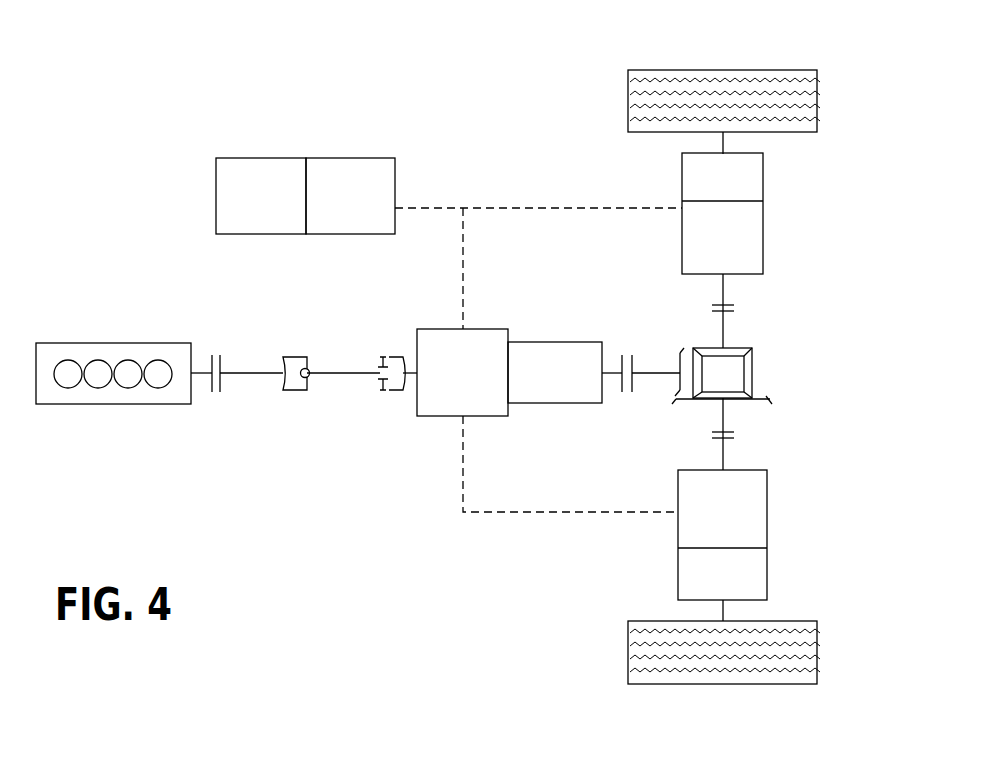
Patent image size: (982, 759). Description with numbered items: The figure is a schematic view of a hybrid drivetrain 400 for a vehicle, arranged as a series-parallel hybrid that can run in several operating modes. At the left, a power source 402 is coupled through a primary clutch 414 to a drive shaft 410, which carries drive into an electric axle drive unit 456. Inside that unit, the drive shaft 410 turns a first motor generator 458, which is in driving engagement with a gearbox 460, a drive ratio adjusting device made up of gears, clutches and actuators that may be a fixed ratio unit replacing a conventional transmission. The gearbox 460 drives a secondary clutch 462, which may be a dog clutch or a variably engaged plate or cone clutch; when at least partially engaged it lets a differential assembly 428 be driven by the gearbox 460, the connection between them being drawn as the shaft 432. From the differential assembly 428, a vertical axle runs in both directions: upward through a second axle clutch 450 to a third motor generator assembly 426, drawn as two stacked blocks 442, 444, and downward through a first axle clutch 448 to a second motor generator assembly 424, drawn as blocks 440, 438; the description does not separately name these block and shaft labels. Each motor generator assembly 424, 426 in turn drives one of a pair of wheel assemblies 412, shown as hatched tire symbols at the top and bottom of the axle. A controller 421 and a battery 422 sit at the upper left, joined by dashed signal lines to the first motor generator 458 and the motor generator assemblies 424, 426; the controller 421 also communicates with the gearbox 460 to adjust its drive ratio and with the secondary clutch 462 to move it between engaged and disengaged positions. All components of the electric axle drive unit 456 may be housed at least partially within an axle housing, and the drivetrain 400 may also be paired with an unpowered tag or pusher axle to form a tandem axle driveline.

The hybrid drivetrain 400 is at (723, 52).
The power source 402 is at (112, 343).
The drive shaft 410 is at (347, 371).
The wheel assemblies 412 is at (817, 99).
The primary clutch 414 is at (225, 386).
The controller 421 is at (346, 158).
The battery 422 is at (260, 158).
The second motor generator assembly 424 is at (780, 483).
The third motor generator assembly 426 is at (775, 154).
The differential assembly 428 is at (767, 371).
The shaft 432 is at (655, 371).
The electric machine 438 is at (741, 586).
The gear reduction 440 is at (741, 521).
The electric machine 442 is at (741, 191).
The gear reduction 444 is at (741, 253).
The first axle clutch 448 is at (734, 430).
The second axle clutch 450 is at (734, 306).
The electric axle drive unit 456 is at (590, 134).
The first motor generator 458 is at (425, 329).
The gearbox 460 is at (535, 342).
The secondary clutch 462 is at (621, 361).